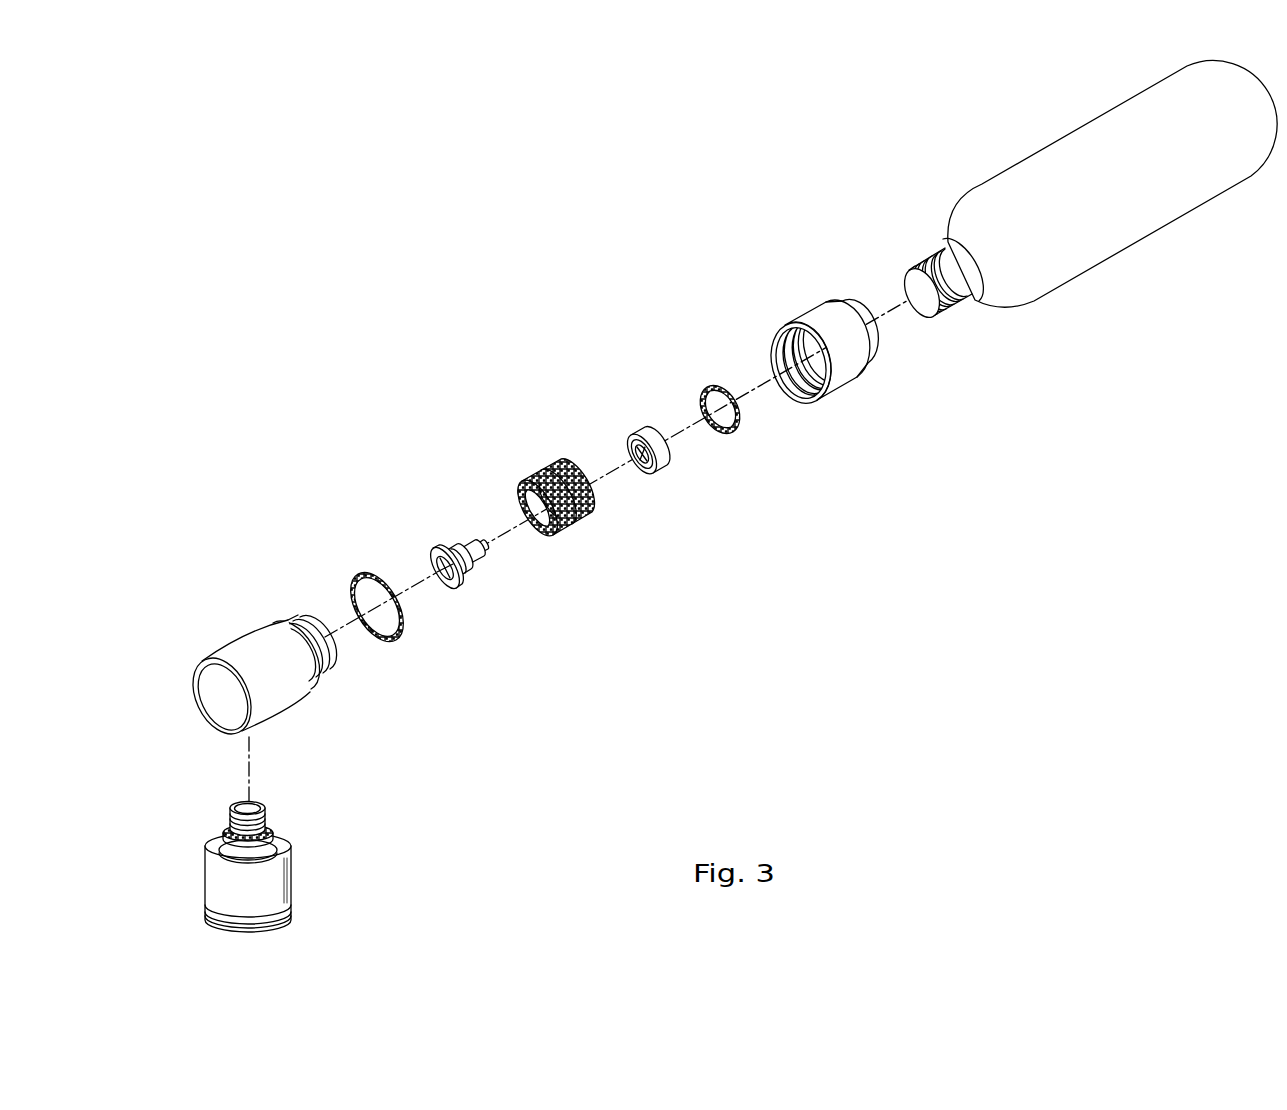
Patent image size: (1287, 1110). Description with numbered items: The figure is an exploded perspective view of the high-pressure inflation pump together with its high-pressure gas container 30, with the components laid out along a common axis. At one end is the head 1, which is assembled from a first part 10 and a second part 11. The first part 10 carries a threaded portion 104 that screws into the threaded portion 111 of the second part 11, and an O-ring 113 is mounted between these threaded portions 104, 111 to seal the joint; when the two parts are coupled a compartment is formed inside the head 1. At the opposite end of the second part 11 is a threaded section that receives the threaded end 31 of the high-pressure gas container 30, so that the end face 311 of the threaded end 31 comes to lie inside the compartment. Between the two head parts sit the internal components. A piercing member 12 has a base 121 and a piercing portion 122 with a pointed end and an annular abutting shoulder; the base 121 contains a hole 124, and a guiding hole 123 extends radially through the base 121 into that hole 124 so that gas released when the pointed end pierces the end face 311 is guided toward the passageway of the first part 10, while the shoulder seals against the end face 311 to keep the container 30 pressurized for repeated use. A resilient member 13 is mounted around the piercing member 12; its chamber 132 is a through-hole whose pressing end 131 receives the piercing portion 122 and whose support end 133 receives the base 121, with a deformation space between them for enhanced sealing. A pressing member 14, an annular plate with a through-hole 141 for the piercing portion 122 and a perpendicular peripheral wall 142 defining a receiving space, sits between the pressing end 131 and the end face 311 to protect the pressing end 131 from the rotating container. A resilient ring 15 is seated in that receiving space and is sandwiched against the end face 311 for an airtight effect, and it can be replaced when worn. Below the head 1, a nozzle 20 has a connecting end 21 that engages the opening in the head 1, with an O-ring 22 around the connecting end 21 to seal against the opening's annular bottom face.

The head 1 is at (182, 723).
The first part 10 is at (289, 658).
The threaded portion 104 is at (332, 673).
The O-ring 113 is at (398, 640).
The piercing member 12 is at (466, 580).
The base 121 is at (447, 583).
The piercing portion 122 is at (485, 542).
The guiding hole 123 is at (468, 573).
The hole 124 is at (458, 583).
The resilient member 13 is at (563, 491).
The pressing end 131 is at (584, 515).
The chamber 132 is at (530, 530).
The support end 133 is at (560, 518).
The pressing member 14 is at (644, 456).
The through-hole 141 is at (630, 452).
The peripheral wall 142 is at (657, 442).
The resilient ring 15 is at (707, 392).
The second part 11 is at (804, 367).
The threaded portion 111 is at (793, 358).
The high-pressure gas container 30 is at (1083, 227).
The threaded end 31 is at (934, 286).
The end face 311 is at (927, 293).
The nozzle 20 is at (260, 864).
The connecting end 21 is at (267, 812).
The O-ring 22 is at (272, 835).